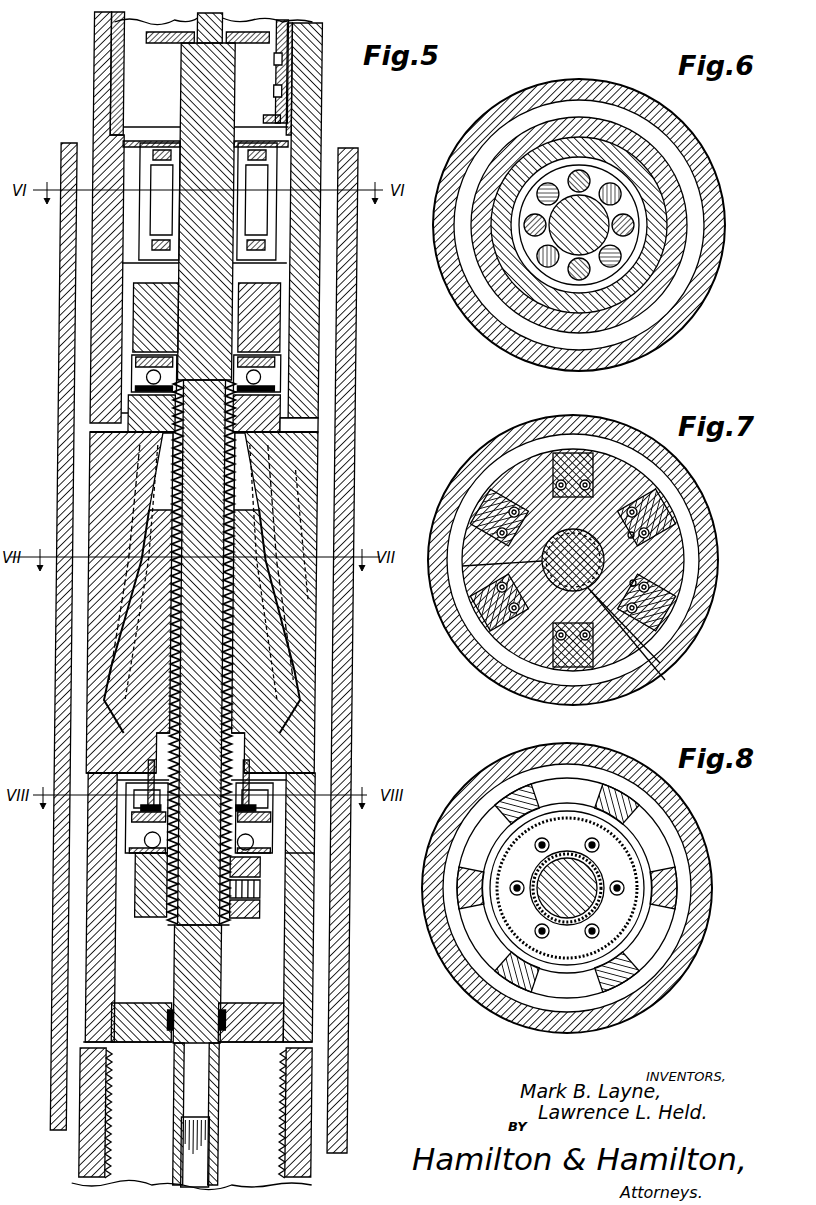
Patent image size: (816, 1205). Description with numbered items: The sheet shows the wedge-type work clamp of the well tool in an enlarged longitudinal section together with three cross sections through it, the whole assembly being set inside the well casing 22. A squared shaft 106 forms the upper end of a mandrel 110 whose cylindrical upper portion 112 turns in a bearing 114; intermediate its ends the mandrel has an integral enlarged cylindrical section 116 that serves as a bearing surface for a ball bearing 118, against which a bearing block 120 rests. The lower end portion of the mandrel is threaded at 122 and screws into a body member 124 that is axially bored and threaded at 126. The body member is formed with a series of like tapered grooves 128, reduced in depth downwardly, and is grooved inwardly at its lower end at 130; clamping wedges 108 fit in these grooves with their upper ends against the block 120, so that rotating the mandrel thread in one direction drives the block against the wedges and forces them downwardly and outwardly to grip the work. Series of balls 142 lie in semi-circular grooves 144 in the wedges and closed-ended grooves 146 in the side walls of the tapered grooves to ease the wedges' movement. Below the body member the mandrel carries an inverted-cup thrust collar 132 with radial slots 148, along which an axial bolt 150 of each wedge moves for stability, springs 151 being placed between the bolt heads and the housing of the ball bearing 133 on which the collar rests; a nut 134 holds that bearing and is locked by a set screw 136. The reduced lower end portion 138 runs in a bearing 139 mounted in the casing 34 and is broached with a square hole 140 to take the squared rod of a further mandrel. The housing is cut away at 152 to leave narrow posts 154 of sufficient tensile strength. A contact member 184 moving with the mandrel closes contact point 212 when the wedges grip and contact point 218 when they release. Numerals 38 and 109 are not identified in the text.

In FIG. 5, the well casing 22 is at (357, 297).
In FIG. 6, the well casing 22 is at (724, 272).
In FIG. 7, the well casing 22 is at (498, 433).
In FIG. 8, the well casing 22 is at (498, 782).
In FIG. 5, the casing 34 is at (308, 393).
In FIG. 6, the casing 34 is at (658, 160).
In FIG. 5, the threaded collar 38 is at (112, 73).
In FIG. 5, the squared shaft 106 is at (215, 24).
In FIG. 5, the clamping wedge 108 is at (305, 493).
In FIG. 7, the clamping wedge 108 is at (665, 612).
In FIG. 5, the shoulder 109 is at (135, 450).
In FIG. 5, the mandrel 110 is at (215, 636).
In FIG. 7, the mandrel 110 is at (540, 560).
In FIG. 8, the mandrel 110 is at (546, 900).
In FIG. 5, the cylindrical upper portion 112 is at (182, 96).
In FIG. 6, the cylindrical upper portion 112 is at (610, 205).
In FIG. 5, the bearing 114 is at (160, 225).
In FIG. 6, the bearing 114 is at (640, 225).
In FIG. 5, the enlarged cylindrical section 116 is at (282, 335).
In FIG. 5, the ball bearing 118 is at (275, 370).
In FIG. 5, the bearing block 120 is at (150, 413).
In FIG. 5, the threaded portion 122 is at (190, 592).
In FIG. 5, the body member 124 is at (270, 678).
In FIG. 7, the body member 124 is at (506, 476).
In FIG. 5, the threaded bore 126 is at (300, 707).
In FIG. 7, the threaded bore 126 is at (586, 600).
In FIG. 7, the tapered groove 128 is at (573, 450).
In FIG. 5, the lower end groove 130 is at (140, 755).
In FIG. 5, the thrust collar 132 is at (140, 832).
In FIG. 8, the thrust collar 132 is at (535, 916).
In FIG. 5, the ball bearing 133 is at (300, 855).
In FIG. 5, the nut 134 is at (262, 910).
In FIG. 5, the set screw 136 is at (262, 888).
In FIG. 5, the lower end portion 138 is at (212, 975).
In FIG. 5, the bearing 139 is at (132, 1010).
In FIG. 5, the square hole 140 is at (200, 1082).
In FIG. 5, the ball bearings 142 is at (100, 641).
In FIG. 7, the ball bearings 142 is at (636, 585).
In FIG. 5, the semi-circular groove 144 is at (140, 470).
In FIG. 7, the semi-circular groove 144 is at (655, 498).
In FIG. 7, the semi-circular groove 146 is at (643, 472).
In FIG. 5, the radial slot 148 is at (145, 780).
In FIG. 5, the bolt 150 is at (150, 813).
In FIG. 8, the bolt 150 is at (530, 890).
In FIG. 5, the spring 151 is at (142, 850).
In FIG. 8, the cut-away portion 152 is at (568, 783).
In FIG. 5, the post 154 is at (300, 428).
In FIG. 8, the post 154 is at (622, 815).
In FIG. 5, the contact member 184 is at (278, 46).
In FIG. 5, the contact point 212 is at (300, 125).
In FIG. 5, the contact point 218 is at (300, 34).